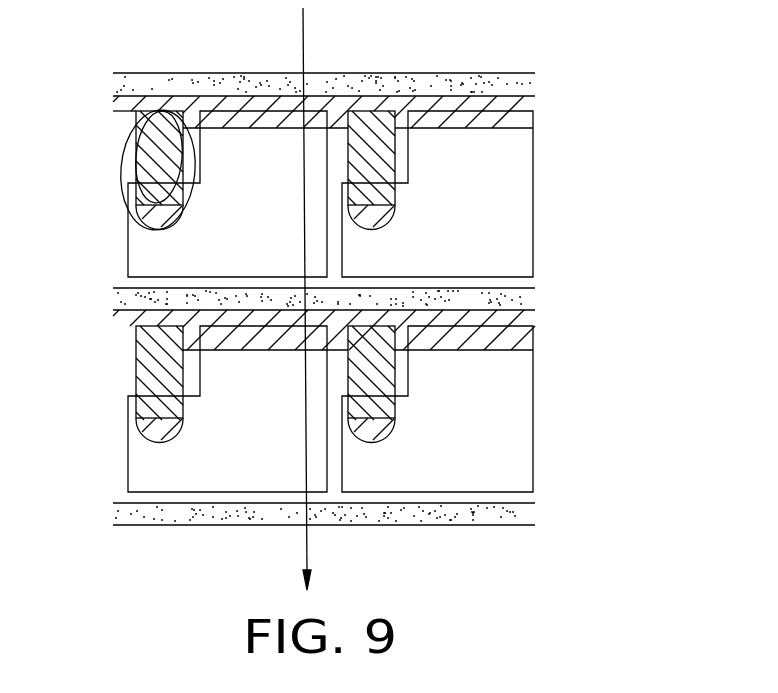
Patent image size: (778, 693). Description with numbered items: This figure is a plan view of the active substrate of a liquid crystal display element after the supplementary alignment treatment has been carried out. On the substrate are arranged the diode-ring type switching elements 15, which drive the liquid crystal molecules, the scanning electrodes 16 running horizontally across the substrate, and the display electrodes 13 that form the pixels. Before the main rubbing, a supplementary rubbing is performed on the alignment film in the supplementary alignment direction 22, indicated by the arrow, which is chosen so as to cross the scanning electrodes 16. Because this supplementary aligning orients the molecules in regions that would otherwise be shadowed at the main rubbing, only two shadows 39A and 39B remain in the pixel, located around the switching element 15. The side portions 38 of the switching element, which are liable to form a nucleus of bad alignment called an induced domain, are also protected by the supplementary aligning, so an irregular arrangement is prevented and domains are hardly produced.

The display electrode 13 is at (142, 242).
The switching element 15 is at (145, 152).
The scanning electrode 16 is at (488, 83).
The supplementary alignment direction 22 is at (308, 558).
The side portions of the switching element 38 is at (124, 118).
The shadow 39A is at (270, 100).
The shadow 39B is at (168, 225).